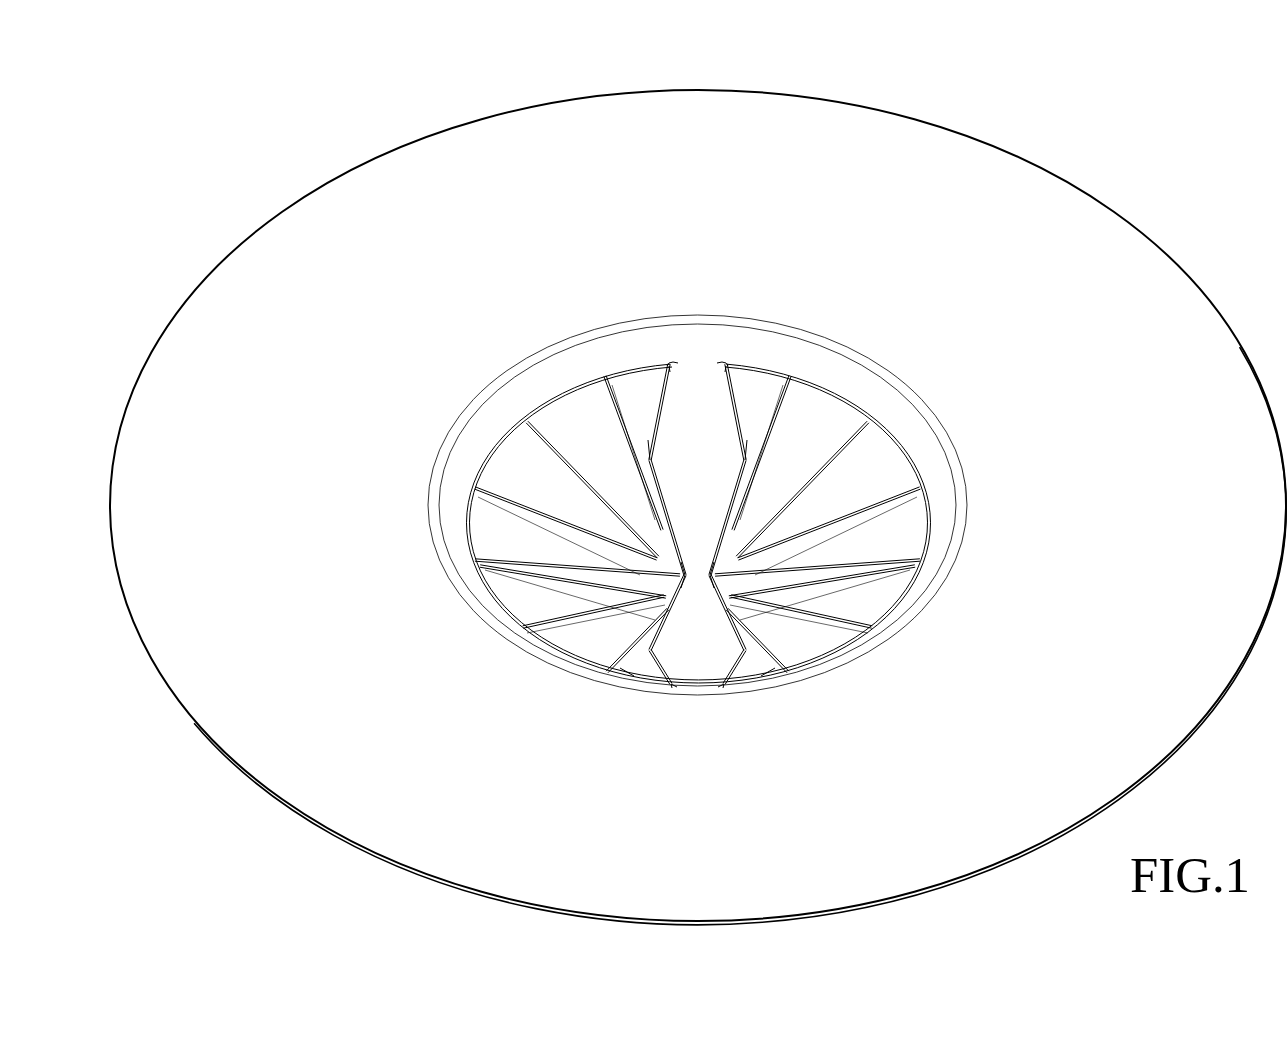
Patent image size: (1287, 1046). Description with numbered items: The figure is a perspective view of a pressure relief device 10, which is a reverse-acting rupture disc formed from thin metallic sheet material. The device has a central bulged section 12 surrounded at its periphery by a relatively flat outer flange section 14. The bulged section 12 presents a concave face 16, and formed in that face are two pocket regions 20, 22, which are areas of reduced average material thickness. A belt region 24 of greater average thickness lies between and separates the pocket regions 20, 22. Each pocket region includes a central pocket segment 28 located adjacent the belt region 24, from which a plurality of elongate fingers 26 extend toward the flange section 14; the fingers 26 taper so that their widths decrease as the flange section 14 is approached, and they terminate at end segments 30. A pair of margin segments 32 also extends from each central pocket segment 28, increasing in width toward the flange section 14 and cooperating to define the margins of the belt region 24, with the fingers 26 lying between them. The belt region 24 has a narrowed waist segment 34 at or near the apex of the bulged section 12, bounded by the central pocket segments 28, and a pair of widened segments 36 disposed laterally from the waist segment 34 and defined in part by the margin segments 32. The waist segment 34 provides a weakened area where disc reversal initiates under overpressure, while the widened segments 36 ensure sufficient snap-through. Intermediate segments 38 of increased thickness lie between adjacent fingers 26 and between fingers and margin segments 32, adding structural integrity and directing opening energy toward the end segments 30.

The pressure relief device 10 is at (1148, 189).
The central bulged section 12 is at (705, 345).
The outer flange section 14 is at (1205, 352).
The concave face 16 is at (805, 350).
The pocket region 20 is at (755, 672).
The pocket region 22 is at (640, 672).
The belt region 24 is at (699, 675).
The elongate fingers 26 is at (795, 500).
The central pocket segment 28 is at (727, 571).
The end segments 30 is at (532, 417).
The margin segments 32 is at (740, 436).
The waist segment 34 is at (698, 578).
The widened segments 36 is at (698, 420).
The intermediate segments 38 is at (565, 415).